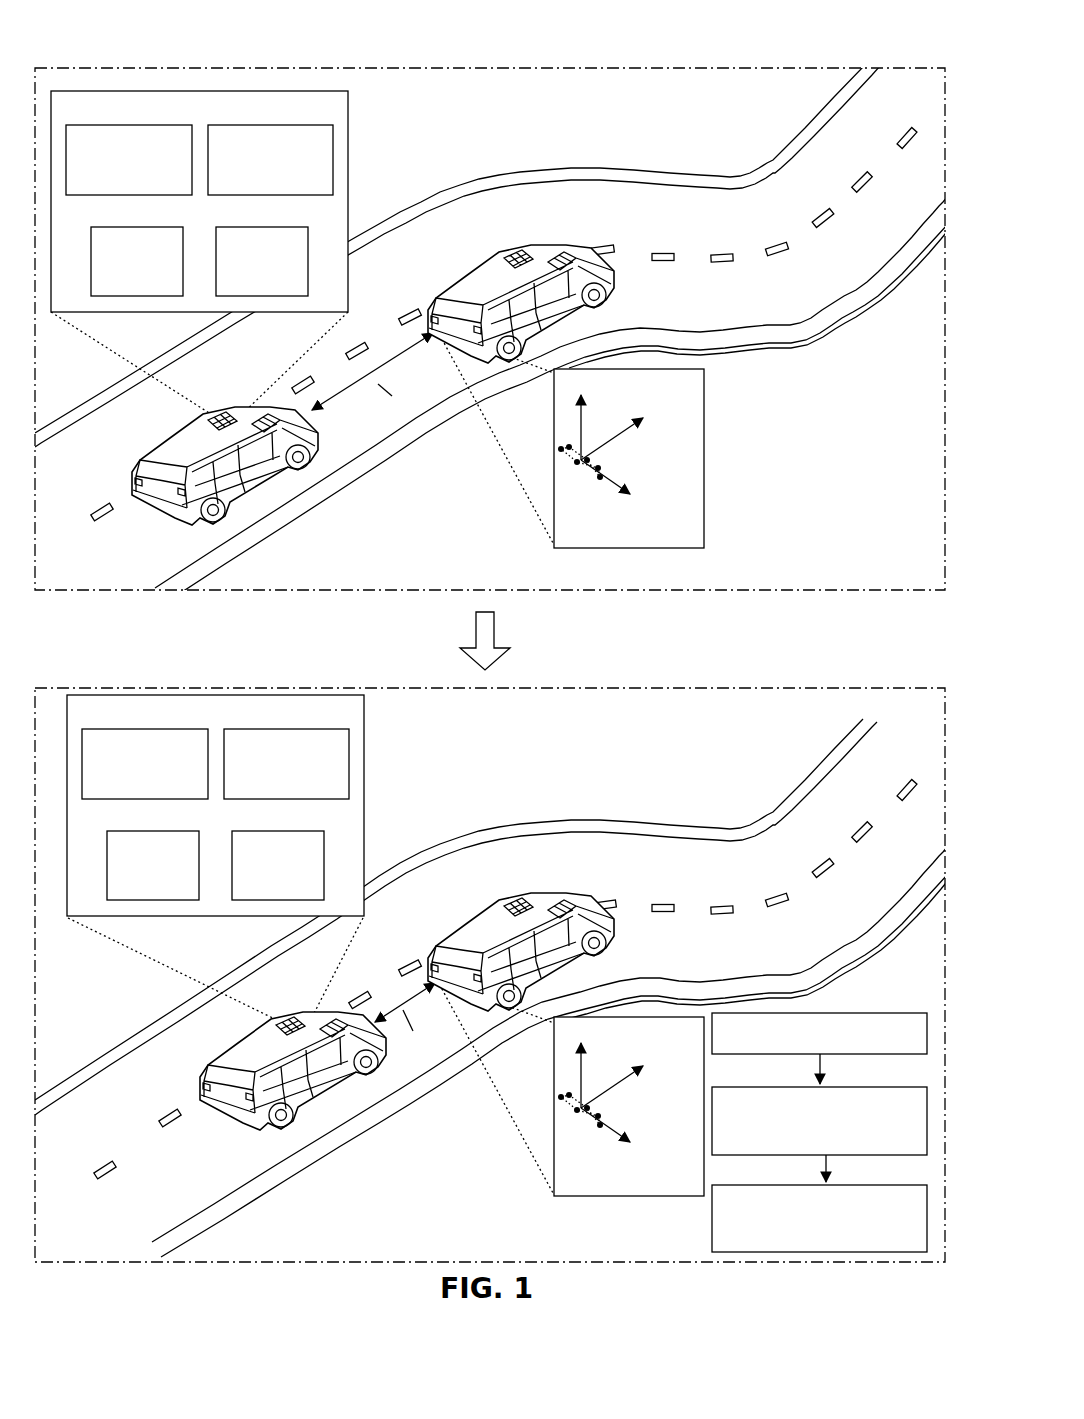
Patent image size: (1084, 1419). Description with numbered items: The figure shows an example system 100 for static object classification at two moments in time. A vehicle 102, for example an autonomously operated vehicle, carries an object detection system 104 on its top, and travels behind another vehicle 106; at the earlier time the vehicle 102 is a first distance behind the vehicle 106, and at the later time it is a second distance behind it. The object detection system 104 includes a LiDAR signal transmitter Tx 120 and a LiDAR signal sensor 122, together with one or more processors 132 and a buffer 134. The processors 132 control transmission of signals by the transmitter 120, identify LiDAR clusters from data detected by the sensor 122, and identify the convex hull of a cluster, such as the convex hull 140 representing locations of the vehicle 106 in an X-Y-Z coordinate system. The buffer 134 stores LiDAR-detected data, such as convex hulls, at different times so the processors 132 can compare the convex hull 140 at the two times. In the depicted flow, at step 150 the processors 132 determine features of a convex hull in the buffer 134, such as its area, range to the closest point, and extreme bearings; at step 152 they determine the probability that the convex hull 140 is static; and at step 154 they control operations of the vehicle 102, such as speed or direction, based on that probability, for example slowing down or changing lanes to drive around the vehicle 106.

The system 100 is at (862, 24).
The vehicle 102 is at (152, 442).
The object detection system 104 is at (221, 408).
The vehicle 106 is at (490, 250).
The LiDAR signal transmitter Tx 120 is at (143, 226).
The LiDAR signal sensor 122 is at (272, 226).
The processors 132 is at (142, 124).
The buffer 134 is at (290, 124).
The convex hull 140 is at (604, 460).
The step 150 is at (860, 1013).
The step 152 is at (860, 1087).
The step 154 is at (860, 1185).